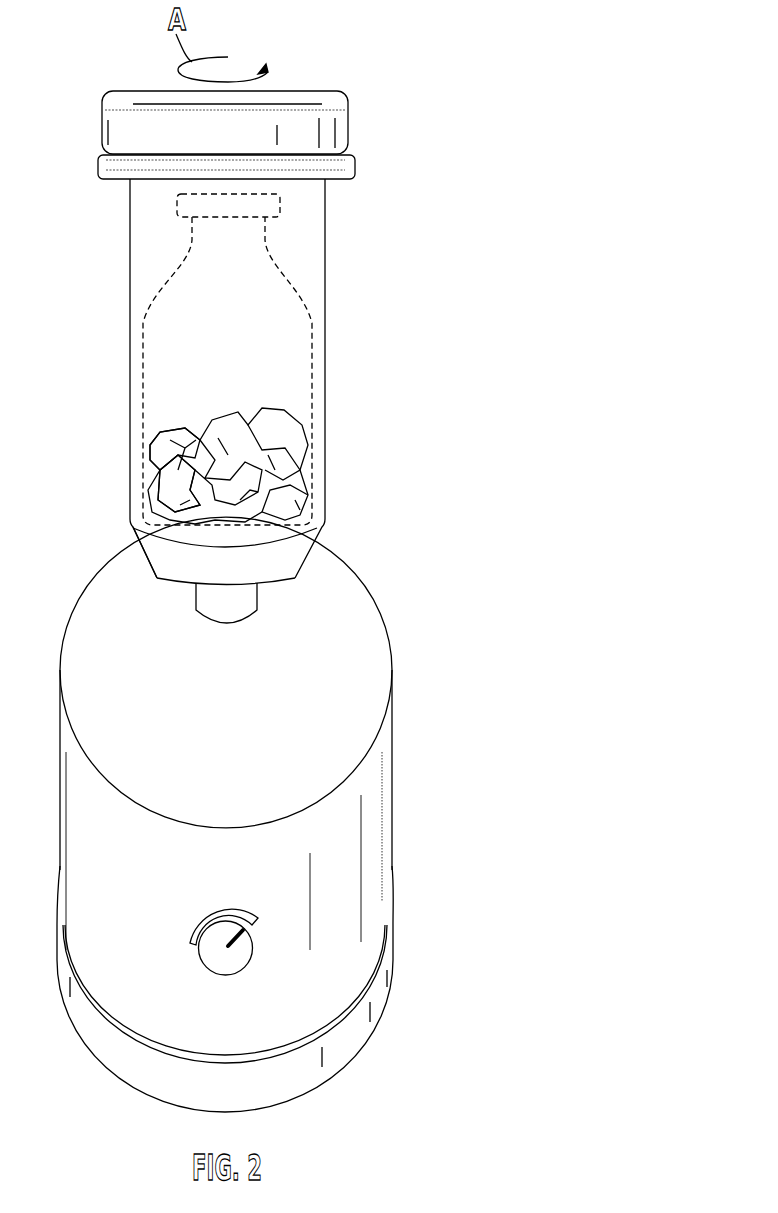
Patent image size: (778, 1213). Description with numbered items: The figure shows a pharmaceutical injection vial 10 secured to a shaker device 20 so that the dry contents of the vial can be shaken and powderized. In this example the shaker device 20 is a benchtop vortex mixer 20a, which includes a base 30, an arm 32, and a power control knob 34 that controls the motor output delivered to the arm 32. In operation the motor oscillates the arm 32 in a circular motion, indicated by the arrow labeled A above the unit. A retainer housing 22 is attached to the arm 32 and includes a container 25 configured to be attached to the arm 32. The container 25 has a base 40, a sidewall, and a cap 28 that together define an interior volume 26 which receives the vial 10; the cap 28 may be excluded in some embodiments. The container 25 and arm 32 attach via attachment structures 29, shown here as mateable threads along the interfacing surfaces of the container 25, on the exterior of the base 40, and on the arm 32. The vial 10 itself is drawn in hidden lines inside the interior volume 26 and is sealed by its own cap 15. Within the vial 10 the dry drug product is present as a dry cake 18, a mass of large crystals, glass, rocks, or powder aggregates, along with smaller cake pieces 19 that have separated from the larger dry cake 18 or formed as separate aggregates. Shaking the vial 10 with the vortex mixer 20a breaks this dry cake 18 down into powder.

The vial 10 is at (222, 359).
The cap 15 is at (177, 208).
The dry cake 18 is at (232, 436).
The cake pieces 19 is at (152, 472).
The shaker device 20 is at (262, 799).
The vortex mixer 20a is at (366, 582).
The retainer housing 22 is at (128, 330).
The container 25 is at (326, 286).
The interior volume 26 is at (310, 204).
The cap 28 is at (321, 96).
The attachment structure 29 is at (138, 550).
The base 30 is at (385, 1005).
The arm 32 is at (215, 600).
The power control knob 34 is at (253, 955).
The base 40 is at (288, 536).